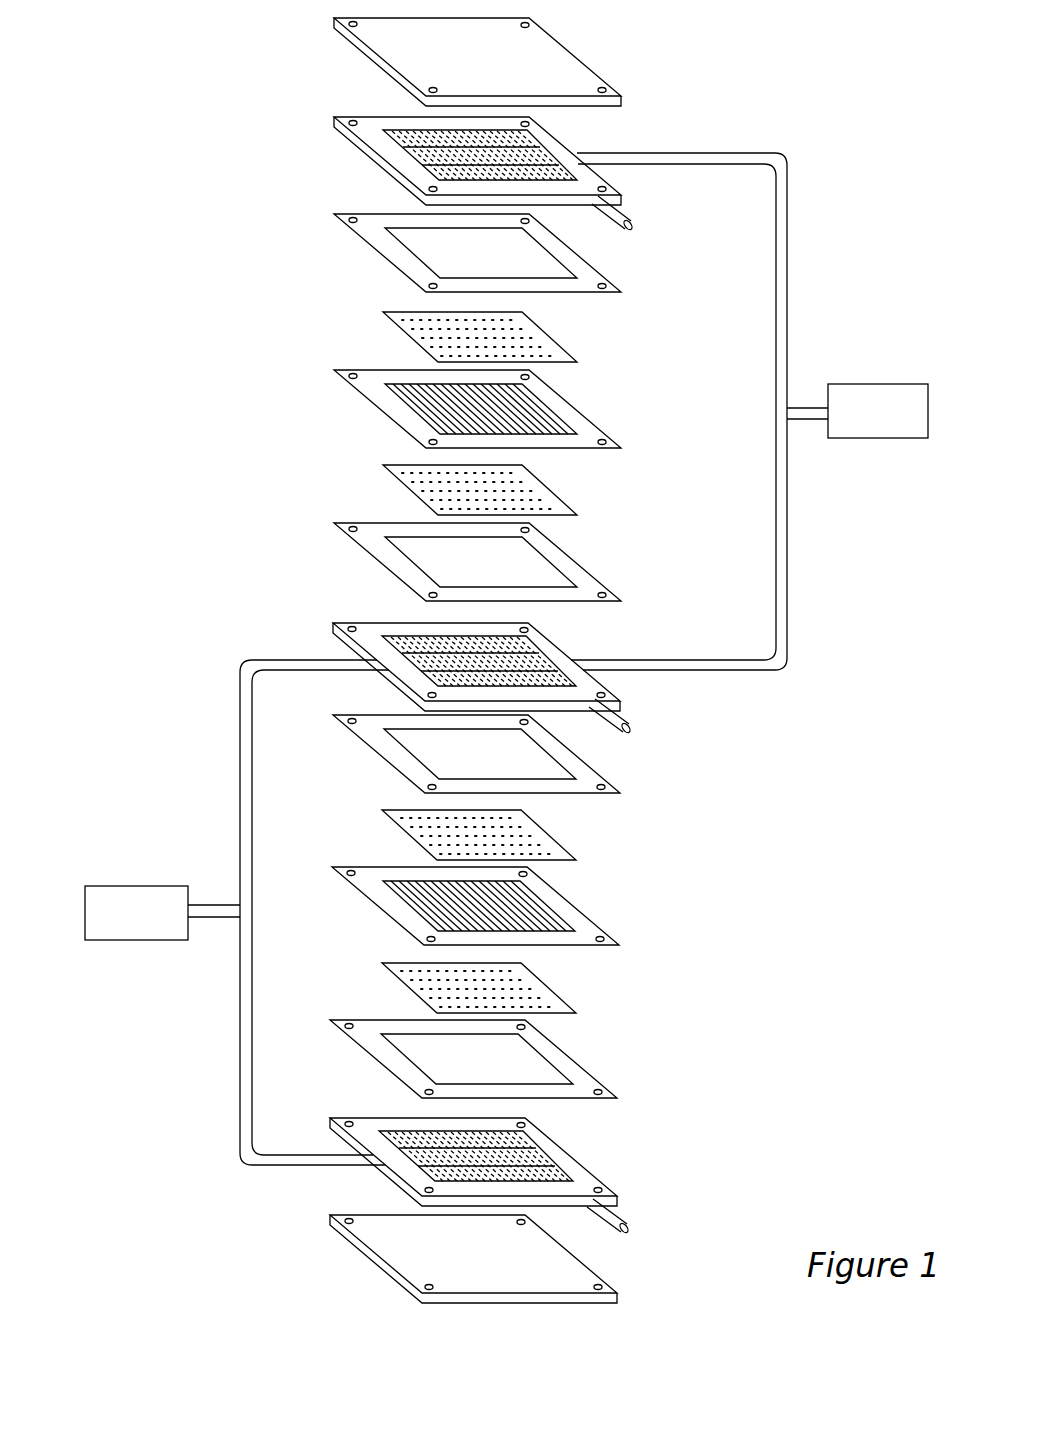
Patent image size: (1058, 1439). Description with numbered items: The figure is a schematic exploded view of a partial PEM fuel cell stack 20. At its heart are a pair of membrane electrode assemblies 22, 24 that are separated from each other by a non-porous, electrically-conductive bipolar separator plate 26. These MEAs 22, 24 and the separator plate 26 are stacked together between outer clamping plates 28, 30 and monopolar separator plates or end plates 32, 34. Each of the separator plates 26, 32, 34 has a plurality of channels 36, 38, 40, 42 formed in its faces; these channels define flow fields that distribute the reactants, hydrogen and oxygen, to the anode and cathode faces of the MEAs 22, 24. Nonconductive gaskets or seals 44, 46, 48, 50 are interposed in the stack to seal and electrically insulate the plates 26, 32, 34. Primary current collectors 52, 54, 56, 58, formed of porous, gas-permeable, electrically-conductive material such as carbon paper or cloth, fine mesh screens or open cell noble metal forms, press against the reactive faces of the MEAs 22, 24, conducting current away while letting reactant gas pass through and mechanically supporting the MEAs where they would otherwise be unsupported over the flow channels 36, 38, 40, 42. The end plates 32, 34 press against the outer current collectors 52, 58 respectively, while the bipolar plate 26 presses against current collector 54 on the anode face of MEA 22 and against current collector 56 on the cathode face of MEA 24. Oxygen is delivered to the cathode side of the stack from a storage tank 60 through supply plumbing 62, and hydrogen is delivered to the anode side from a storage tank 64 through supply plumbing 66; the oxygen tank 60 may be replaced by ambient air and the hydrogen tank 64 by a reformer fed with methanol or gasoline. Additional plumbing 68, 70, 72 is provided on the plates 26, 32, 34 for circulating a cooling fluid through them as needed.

The PEM fuel cell stack 20 is at (190, 299).
The membrane electrode assembly 22 is at (375, 405).
The membrane electrode assembly 24 is at (587, 915).
The bipolar separator plate 26 is at (451, 656).
The clamping plate 28 is at (377, 54).
The clamping plate 30 is at (583, 1268).
The monopolar separator plate 32 is at (490, 146).
The monopolar separator plate 34 is at (522, 1150).
The channels 36 is at (562, 133).
The channels 38 is at (398, 644).
The channels 40 is at (570, 712).
The channels 42 is at (547, 1137).
The nonconductive gasket 44 is at (370, 243).
The nonconductive gasket 46 is at (373, 558).
The nonconductive gasket 48 is at (617, 790).
The nonconductive gasket 50 is at (575, 1060).
The primary current collector 52 is at (402, 328).
The primary current collector 54 is at (403, 483).
The primary current collector 56 is at (560, 840).
The primary current collector 58 is at (547, 988).
The oxygen storage tank 60 is at (880, 384).
The oxygen supply plumbing 62 is at (781, 578).
The hydrogen storage tank 64 is at (108, 886).
The hydrogen supply plumbing 66 is at (246, 703).
The cooling fluid plumbing 68 is at (632, 221).
The cooling fluid plumbing 70 is at (630, 724).
The cooling fluid plumbing 72 is at (628, 1223).